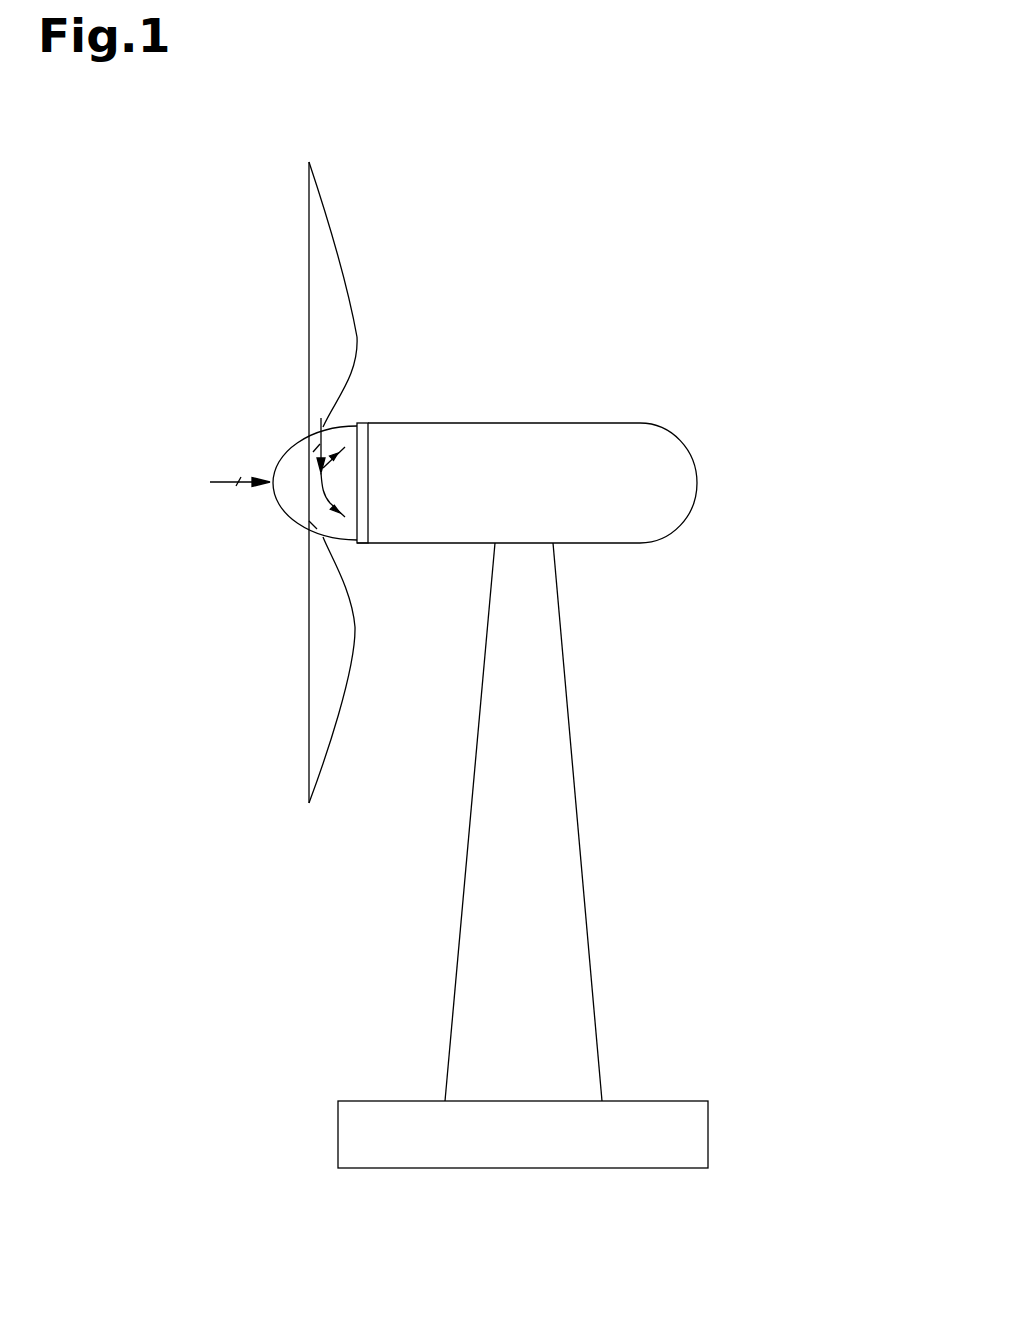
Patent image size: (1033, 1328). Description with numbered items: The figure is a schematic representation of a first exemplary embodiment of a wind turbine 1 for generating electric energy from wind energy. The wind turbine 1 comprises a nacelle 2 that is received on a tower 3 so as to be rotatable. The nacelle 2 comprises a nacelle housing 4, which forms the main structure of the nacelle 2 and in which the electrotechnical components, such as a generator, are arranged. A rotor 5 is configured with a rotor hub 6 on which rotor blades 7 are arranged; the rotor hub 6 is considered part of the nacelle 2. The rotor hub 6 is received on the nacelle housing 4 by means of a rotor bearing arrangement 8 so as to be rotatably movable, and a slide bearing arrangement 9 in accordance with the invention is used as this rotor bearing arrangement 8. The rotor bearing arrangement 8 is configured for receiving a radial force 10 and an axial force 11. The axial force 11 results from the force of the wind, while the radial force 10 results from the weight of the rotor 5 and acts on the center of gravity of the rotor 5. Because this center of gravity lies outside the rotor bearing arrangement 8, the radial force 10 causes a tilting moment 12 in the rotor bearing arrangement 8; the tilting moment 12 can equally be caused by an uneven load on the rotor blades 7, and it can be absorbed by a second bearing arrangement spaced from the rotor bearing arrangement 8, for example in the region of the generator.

The wind turbine 1 is at (700, 137).
The nacelle 2 is at (595, 337).
The tower 3 is at (550, 778).
The nacelle housing 4 is at (592, 443).
The rotor 5 is at (265, 432).
The rotor hub 6 is at (313, 525).
The rotor blades 7 is at (335, 312).
The rotor bearing arrangement 8 is at (373, 412).
The slide bearing arrangement 9 is at (367, 579).
The radial force 10 is at (318, 447).
The axial force 11 is at (238, 480).
The tilting moment 12 is at (325, 499).